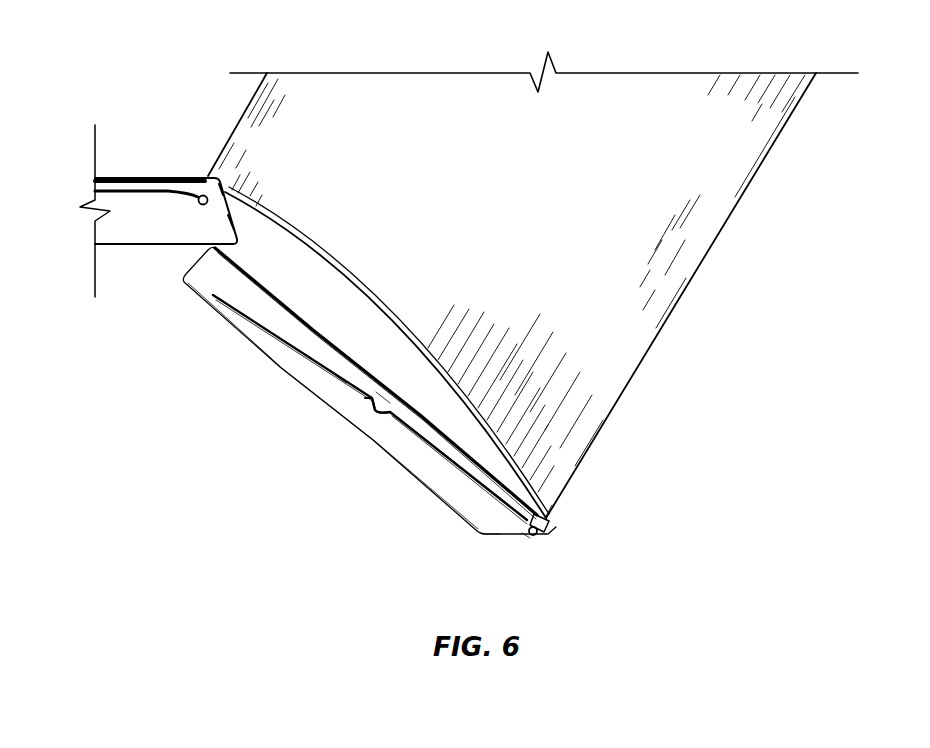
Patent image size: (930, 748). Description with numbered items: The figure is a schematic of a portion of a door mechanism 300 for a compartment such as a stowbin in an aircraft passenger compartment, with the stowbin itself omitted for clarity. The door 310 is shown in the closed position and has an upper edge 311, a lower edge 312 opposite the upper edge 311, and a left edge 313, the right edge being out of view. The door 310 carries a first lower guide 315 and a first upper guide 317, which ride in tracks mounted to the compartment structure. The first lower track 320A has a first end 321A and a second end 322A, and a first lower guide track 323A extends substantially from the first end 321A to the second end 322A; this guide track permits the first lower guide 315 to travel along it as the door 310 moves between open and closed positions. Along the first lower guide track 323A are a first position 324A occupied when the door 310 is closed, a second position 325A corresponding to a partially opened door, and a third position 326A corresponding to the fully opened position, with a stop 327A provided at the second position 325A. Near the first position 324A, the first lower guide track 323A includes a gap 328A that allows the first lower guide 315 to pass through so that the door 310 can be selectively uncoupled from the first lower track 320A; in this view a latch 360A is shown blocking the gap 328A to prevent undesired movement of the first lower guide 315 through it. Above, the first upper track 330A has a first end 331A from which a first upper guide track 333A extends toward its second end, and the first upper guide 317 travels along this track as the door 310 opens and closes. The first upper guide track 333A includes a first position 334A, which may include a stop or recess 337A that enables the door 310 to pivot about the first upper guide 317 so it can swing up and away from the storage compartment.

The door mechanism 300 is at (114, 47).
The door 310 is at (520, 189).
The upper edge 311 is at (250, 98).
The lower edge 312 is at (778, 137).
The left edge 313 is at (365, 288).
The first lower guide 315 is at (540, 535).
The first upper guide 317 is at (165, 188).
The first lower track 320A is at (430, 472).
The first end 321A is at (490, 536).
The second end 322A is at (183, 276).
The first lower guide track 323A is at (334, 382).
The first position 324A is at (520, 540).
The second position 325A is at (386, 390).
The third position 326A is at (208, 300).
The stop 327A is at (363, 420).
The gap 328A is at (554, 504).
The first upper track 330A is at (195, 231).
The first end 331A is at (233, 222).
The first upper guide track 333A is at (118, 178).
The first position 334A is at (200, 170).
The stop or recess 337A is at (226, 186).
The latch 360A is at (548, 527).